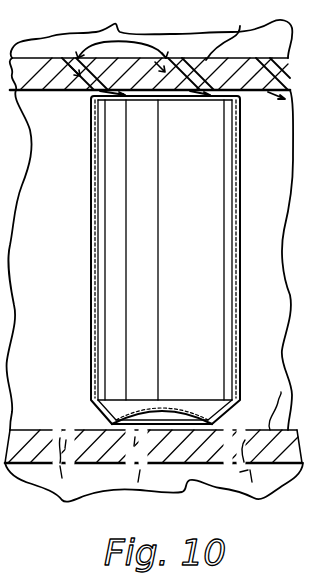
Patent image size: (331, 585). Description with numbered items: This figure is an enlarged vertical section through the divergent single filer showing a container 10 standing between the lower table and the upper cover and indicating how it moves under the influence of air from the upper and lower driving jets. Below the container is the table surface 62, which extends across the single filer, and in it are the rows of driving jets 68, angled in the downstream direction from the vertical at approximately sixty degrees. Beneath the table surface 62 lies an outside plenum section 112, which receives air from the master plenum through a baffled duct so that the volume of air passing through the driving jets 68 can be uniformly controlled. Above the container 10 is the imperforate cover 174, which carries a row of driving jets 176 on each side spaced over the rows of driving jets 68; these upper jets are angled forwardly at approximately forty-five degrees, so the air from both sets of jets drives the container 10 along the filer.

The container 10 is at (198, 229).
The table surface 62 is at (268, 406).
The driving jets 68 is at (62, 500).
The outside plenum section 112 is at (188, 480).
The imperforate cover 174 is at (240, 27).
The driving jets 176 is at (114, 27).